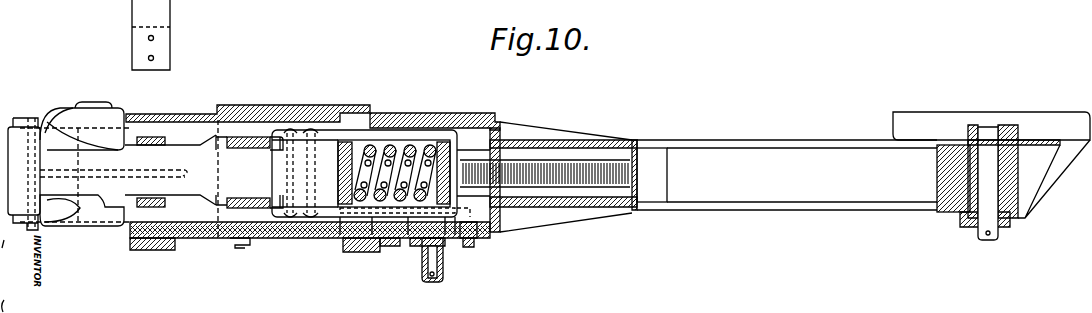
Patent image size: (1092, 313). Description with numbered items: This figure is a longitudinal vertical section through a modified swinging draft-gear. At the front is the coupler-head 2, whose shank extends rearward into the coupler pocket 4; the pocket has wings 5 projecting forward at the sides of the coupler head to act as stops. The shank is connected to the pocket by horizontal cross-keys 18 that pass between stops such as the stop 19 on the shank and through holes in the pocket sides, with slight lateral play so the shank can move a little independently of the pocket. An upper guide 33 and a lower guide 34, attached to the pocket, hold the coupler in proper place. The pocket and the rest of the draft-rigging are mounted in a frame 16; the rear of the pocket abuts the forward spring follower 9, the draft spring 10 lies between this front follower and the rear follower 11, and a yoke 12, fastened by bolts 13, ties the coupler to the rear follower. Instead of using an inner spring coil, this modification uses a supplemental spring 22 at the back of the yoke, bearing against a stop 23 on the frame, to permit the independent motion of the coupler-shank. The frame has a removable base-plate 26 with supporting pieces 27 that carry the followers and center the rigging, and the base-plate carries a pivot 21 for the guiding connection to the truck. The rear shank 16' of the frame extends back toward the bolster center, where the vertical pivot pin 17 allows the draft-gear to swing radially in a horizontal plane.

The coupler-head 2 is at (119, 171).
The coupler pocket 4 is at (185, 110).
The wings 5 is at (62, 224).
The forward spring follower 9 is at (339, 172).
The spring 10 is at (452, 200).
The rear follower 11 is at (449, 162).
The yoke 12 is at (378, 140).
The bolts 13 is at (311, 221).
The frame 16 is at (503, 163).
The rear shank 16' is at (787, 175).
The vertical pivot pin 17 is at (991, 176).
The horizontal cross-keys 18 is at (258, 206).
The stop 19 is at (222, 205).
The pivot 21 is at (444, 262).
The supplemental spring 22 is at (598, 190).
The stop 23 is at (640, 175).
The base-plate 26 is at (376, 250).
The supporting pieces 27 is at (423, 226).
The upper guide 33 is at (160, 140).
The lower guide 34 is at (162, 204).